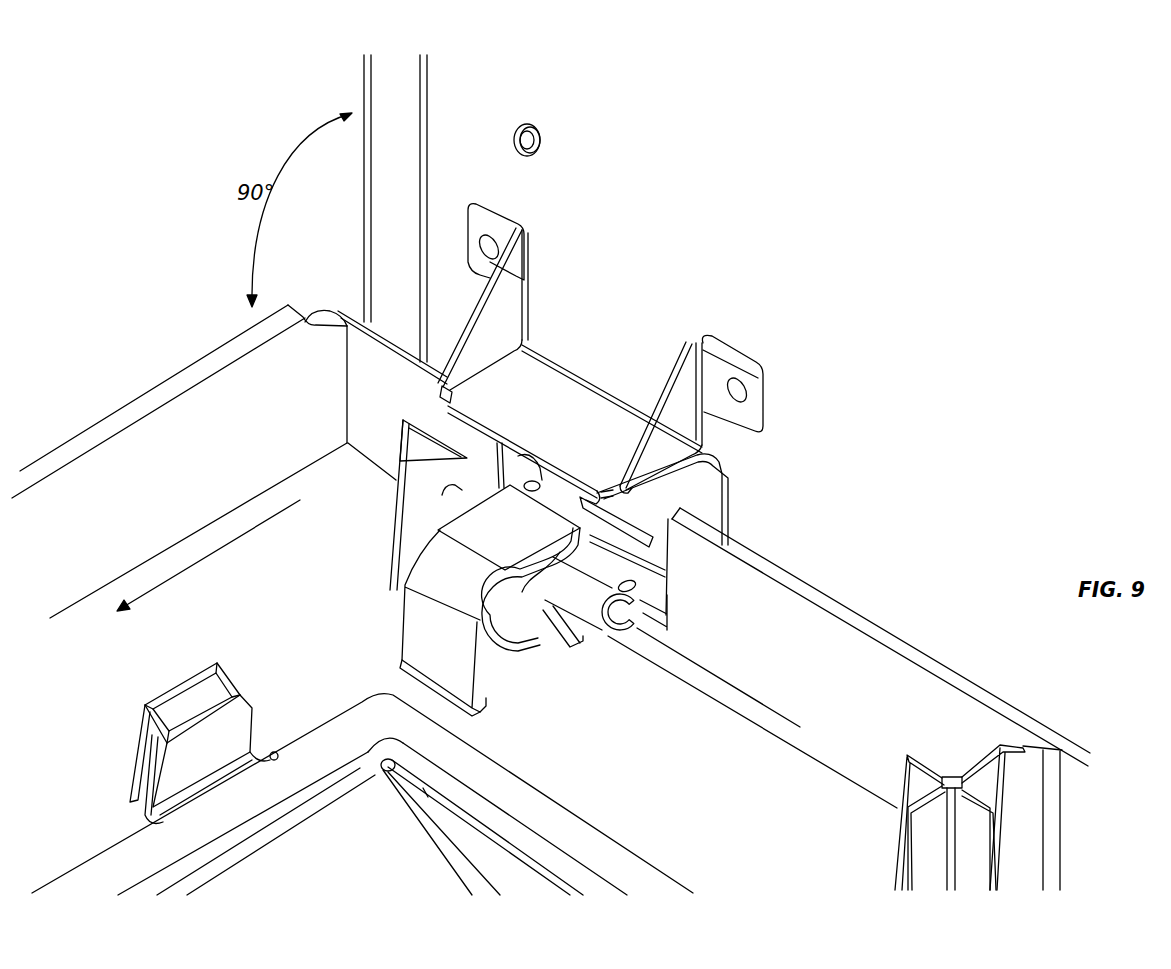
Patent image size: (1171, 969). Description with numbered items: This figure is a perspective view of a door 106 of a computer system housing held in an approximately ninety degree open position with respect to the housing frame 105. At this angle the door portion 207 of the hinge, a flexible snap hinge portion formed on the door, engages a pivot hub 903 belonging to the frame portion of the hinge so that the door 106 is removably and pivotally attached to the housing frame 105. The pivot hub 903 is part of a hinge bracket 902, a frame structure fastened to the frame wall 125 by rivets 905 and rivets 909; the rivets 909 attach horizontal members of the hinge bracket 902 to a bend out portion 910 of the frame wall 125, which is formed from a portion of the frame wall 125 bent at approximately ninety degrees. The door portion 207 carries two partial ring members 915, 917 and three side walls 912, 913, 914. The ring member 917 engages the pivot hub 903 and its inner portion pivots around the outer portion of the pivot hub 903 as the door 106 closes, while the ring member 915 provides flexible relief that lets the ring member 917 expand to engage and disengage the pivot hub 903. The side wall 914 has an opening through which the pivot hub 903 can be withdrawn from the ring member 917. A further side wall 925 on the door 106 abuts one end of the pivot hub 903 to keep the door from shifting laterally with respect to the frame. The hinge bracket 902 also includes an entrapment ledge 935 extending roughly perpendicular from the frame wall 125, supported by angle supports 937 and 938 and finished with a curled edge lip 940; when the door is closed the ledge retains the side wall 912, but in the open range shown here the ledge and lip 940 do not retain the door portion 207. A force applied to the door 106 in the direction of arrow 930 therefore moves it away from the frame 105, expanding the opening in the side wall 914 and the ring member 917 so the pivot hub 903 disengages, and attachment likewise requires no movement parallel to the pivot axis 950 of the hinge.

The housing frame 105 is at (345, 75).
The door 106 is at (204, 460).
The frame wall 125 is at (613, 85).
The door portion of the hinge 207 is at (547, 747).
The hinge bracket 902 is at (702, 499).
The pivot hub 903 is at (601, 626).
The rivets 905 is at (640, 314).
The rivets 909 is at (673, 578).
The bend out portion 910 is at (695, 621).
The side wall 912 is at (460, 656).
The side wall 913 is at (526, 539).
The side wall 914 is at (595, 670).
The ring member 915 is at (531, 696).
The ring member 917 is at (534, 650).
The side wall 925 is at (389, 505).
The arrow 930 is at (208, 560).
The entrapment ledge 935 is at (597, 429).
The angle support 937 is at (519, 309).
The angle support 938 is at (650, 417).
The curled edge lip 940 is at (408, 384).
The axis 950 is at (849, 658).